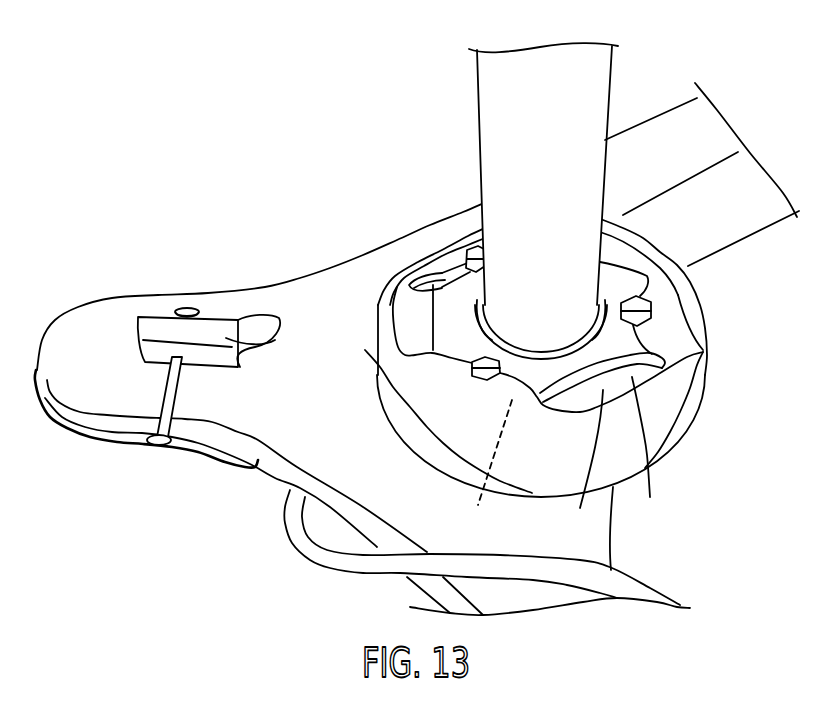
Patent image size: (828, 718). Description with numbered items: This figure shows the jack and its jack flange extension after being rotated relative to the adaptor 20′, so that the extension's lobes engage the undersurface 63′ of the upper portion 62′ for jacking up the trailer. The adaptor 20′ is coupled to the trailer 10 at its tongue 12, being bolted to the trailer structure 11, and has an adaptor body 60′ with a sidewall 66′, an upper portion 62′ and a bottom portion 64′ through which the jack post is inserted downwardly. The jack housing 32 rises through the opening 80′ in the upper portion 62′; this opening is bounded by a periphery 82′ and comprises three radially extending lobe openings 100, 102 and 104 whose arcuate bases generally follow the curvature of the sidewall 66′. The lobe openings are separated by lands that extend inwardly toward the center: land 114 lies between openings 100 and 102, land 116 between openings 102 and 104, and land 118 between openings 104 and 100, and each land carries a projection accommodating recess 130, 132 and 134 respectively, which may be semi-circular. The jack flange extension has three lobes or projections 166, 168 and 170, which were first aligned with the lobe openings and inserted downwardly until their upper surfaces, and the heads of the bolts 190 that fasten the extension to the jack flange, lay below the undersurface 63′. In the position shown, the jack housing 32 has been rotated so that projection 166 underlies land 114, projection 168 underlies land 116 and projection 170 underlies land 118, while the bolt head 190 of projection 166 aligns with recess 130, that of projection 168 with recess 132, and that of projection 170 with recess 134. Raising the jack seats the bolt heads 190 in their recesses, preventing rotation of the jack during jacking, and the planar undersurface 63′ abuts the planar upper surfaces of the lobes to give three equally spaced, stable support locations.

The trailer 10 is at (146, 464).
The trailer structure 11 is at (287, 432).
The tongue 12 is at (62, 337).
The adaptor 20′ is at (692, 248).
The jack housing 32 is at (488, 80).
The adaptor body 60′ is at (708, 357).
The upper portion 62′ is at (700, 313).
The undersurface 63′ is at (400, 290).
The bottom portion 64′ is at (663, 455).
The sidewall 66′ is at (677, 427).
The opening 80′ is at (415, 317).
The periphery 82′ is at (432, 268).
The lobe opening 100 is at (610, 233).
The lobe opening 102 is at (405, 332).
The lobe opening 104 is at (585, 464).
The land 114 is at (477, 246).
The land 116 is at (457, 372).
The land 118 is at (667, 292).
The projection accommodating recess 130 is at (461, 292).
The projection accommodating recess 132 is at (490, 385).
The projection accommodating recess 134 is at (667, 292).
The projection 166 is at (440, 270).
The projection 168 is at (490, 468).
The projection 170 is at (647, 447).
The bolt 190 is at (468, 250).